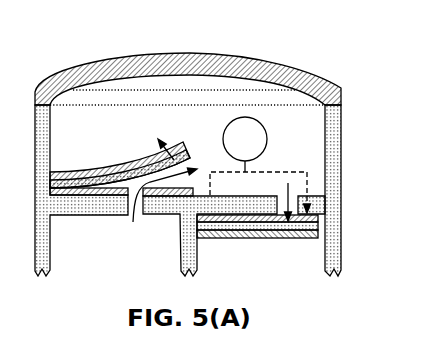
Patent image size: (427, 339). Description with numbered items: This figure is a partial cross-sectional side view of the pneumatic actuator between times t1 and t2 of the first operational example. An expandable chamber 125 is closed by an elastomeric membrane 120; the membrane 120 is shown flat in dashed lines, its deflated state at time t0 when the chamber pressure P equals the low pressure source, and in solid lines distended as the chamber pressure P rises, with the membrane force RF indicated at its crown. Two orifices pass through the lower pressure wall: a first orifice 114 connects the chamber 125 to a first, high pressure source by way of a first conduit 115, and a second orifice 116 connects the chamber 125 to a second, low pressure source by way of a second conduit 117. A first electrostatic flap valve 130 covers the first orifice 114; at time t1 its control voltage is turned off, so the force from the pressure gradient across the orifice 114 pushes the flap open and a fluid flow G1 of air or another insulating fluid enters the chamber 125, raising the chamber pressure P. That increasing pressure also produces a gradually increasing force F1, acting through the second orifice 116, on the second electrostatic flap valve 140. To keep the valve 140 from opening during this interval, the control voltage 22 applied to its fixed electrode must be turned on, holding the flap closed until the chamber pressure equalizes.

The elastomeric membrane 120 is at (250, 62).
The expandable chamber 125 is at (147, 128).
The first electrostatic flap valve 130 is at (152, 158).
The second electrostatic flap valve 140 is at (233, 239).
The first conduit 115 is at (102, 272).
The second conduit 117 is at (250, 274).
The first orifice 114 is at (139, 219).
The second orifice 116 is at (296, 184).
The control voltage V22 22 is at (245, 144).
The fluid flow G1 is at (153, 204).
The increasing force F1 is at (274, 198).
The membrane force RF is at (188, 47).
The chamber pressure PC125 P is at (188, 82).